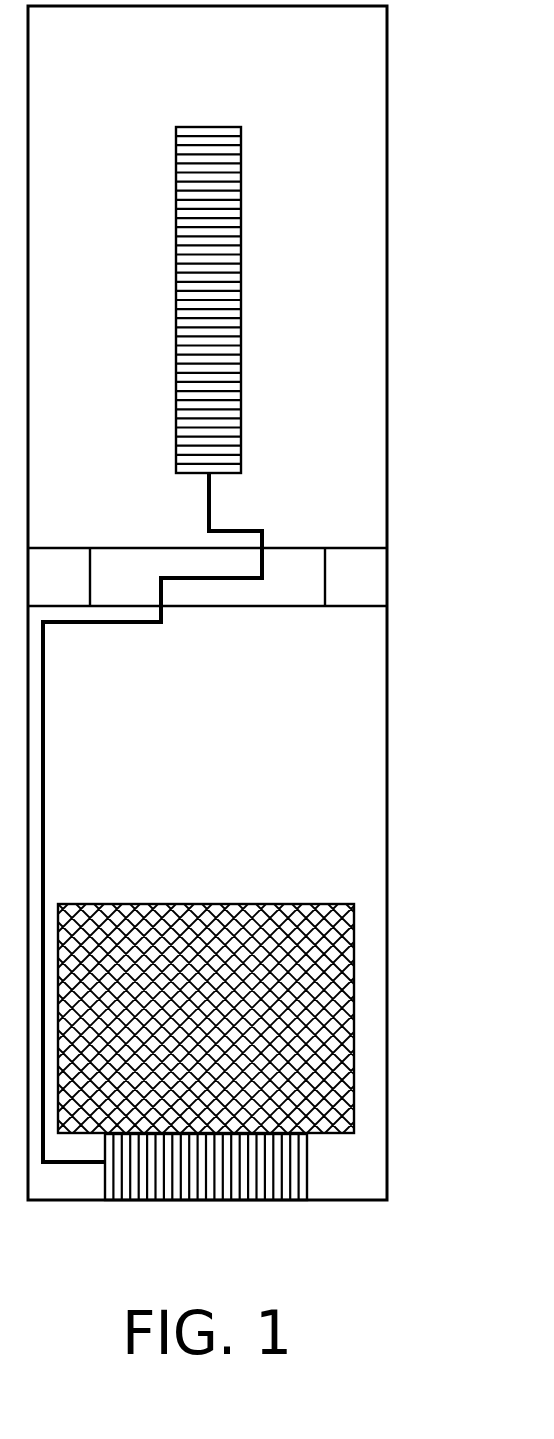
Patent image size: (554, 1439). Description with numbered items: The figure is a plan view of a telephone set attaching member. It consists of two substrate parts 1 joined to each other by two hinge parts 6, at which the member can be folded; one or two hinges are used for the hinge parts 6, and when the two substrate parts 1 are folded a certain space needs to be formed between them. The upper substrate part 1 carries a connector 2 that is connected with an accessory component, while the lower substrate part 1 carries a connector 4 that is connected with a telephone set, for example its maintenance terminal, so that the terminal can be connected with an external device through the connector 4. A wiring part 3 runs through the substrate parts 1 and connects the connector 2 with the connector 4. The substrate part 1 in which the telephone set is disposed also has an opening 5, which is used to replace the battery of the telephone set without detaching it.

The substrate part 1 is at (387, 50).
The connector 2 is at (242, 201).
The wiring part 3 is at (212, 505).
The connector 4 is at (307, 1178).
The opening 5 is at (354, 997).
The hinge part 6 is at (387, 548).